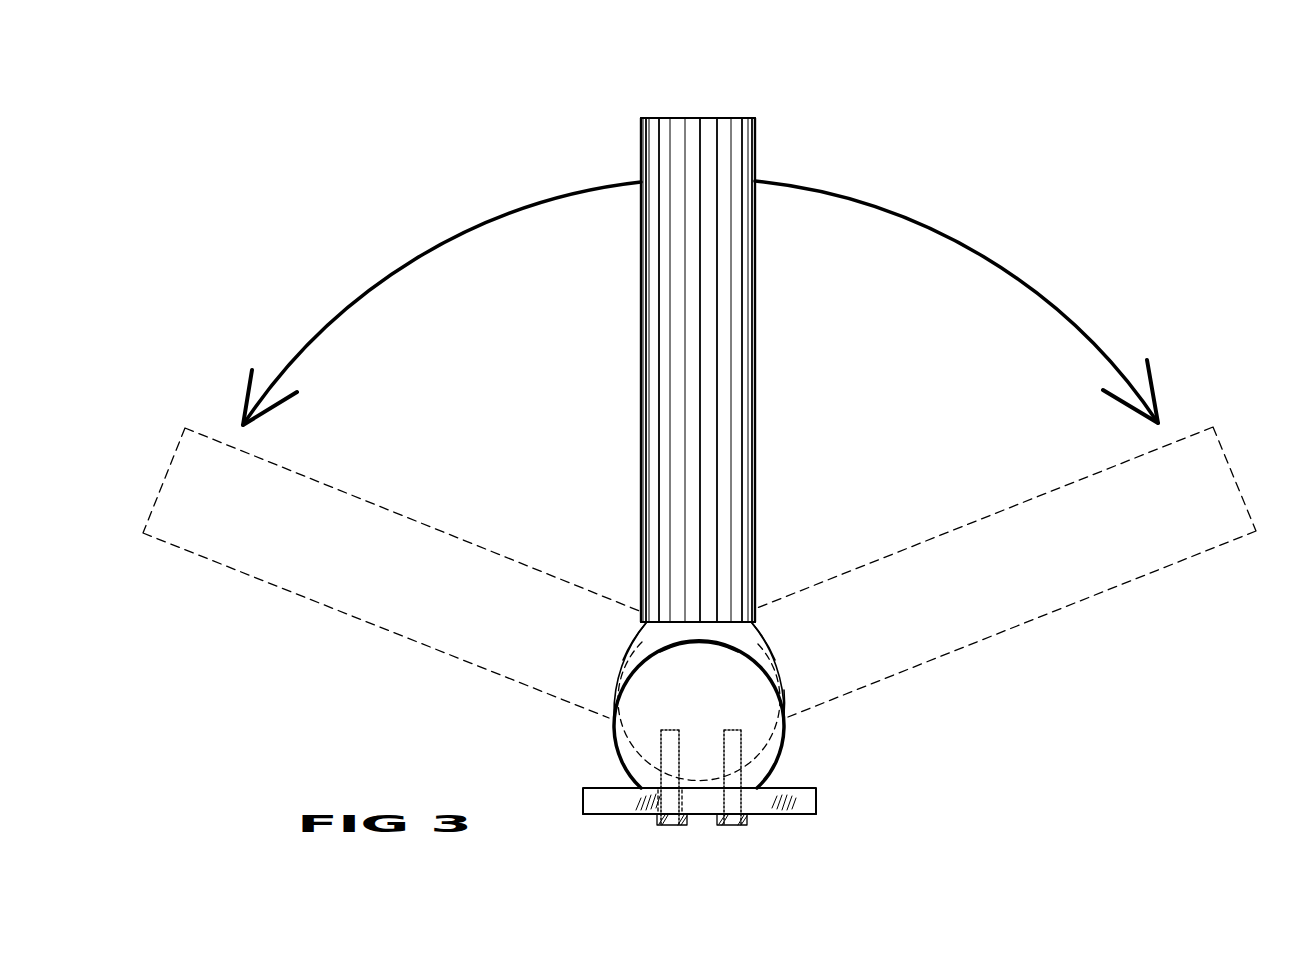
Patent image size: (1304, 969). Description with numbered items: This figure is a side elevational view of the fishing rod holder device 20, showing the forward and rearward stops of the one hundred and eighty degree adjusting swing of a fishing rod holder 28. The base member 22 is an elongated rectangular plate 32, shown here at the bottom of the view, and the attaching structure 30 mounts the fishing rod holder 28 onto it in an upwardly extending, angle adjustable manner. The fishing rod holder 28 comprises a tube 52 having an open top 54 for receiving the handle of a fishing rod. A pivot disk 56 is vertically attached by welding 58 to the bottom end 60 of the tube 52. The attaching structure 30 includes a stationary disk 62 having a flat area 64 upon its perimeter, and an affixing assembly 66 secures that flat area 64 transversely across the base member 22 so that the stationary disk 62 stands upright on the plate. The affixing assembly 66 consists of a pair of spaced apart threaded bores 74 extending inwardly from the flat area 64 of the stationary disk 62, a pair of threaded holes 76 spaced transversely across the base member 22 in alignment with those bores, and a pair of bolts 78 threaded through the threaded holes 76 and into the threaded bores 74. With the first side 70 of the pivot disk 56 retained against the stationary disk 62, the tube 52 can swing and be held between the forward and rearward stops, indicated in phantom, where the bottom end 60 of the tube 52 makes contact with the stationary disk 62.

The fishing rod holder device 20 is at (517, 146).
The base member 22 is at (600, 819).
The fishing rod holder 28 is at (767, 388).
The attaching structure 30 is at (602, 747).
The elongated rectangular plate 32 is at (806, 805).
The tube 52 is at (629, 345).
The open top 54 is at (726, 118).
The pivot disk 56 is at (789, 663).
The welding 58 is at (765, 626).
The bottom end 60 is at (700, 623).
The stationary disk 62 is at (797, 747).
The flat area 64 is at (705, 789).
The affixing assembly 66 is at (748, 838).
The first side 70 is at (640, 642).
The threaded bores 74 is at (740, 729).
The threaded holes 76 is at (660, 800).
The bolts 78 is at (676, 822).